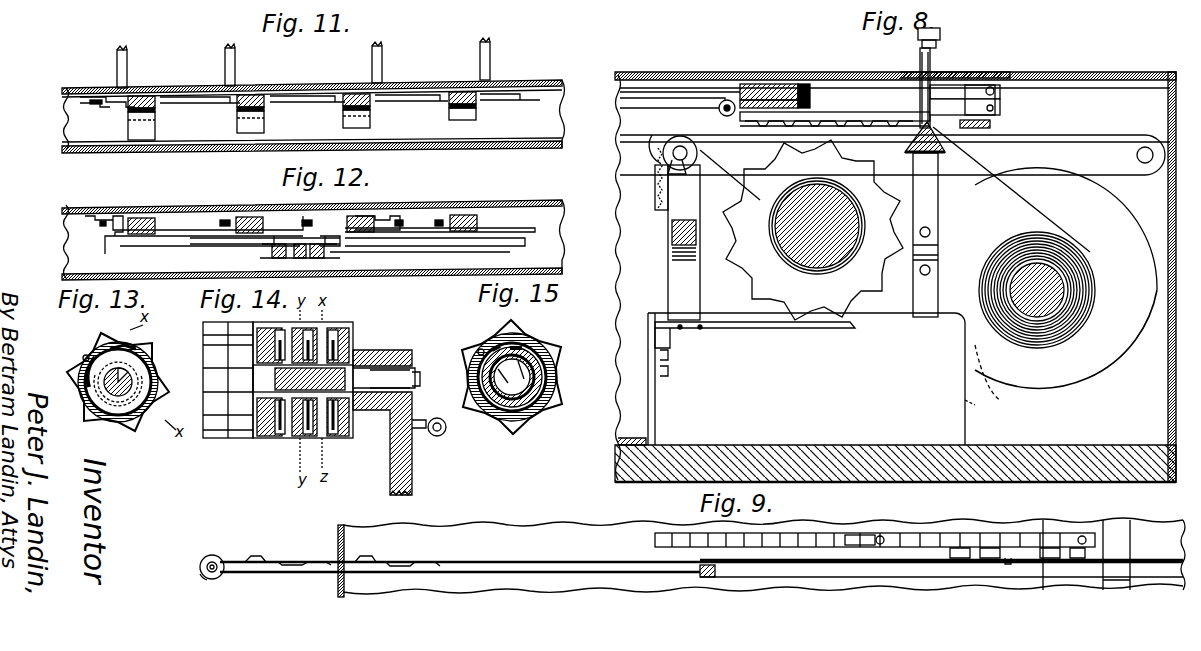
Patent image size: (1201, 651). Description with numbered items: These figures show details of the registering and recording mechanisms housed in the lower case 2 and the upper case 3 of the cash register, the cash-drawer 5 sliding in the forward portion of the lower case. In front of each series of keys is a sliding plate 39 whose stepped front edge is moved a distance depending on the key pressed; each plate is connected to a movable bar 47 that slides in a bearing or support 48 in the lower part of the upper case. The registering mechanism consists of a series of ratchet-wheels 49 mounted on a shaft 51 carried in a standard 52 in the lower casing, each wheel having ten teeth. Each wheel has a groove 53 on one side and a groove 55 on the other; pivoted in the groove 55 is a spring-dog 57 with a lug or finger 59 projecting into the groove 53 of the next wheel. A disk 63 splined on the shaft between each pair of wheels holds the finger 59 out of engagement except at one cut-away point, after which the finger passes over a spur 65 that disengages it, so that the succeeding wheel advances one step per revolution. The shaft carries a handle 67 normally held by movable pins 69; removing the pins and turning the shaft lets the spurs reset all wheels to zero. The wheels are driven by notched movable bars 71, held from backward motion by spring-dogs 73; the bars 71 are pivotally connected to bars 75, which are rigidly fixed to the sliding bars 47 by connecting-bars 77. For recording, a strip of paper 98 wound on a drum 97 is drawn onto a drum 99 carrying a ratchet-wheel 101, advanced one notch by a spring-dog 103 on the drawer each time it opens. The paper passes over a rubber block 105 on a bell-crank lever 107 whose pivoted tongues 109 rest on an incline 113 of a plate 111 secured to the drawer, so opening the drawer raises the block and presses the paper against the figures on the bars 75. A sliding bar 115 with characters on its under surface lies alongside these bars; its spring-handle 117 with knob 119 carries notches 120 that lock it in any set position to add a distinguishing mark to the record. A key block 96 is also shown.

In FIG. 8, the lower case 2 is at (1165, 200).
In FIG. 11, the upper case 3 is at (552, 112).
In FIG. 12, the upper case 3 is at (538, 212).
In FIG. 8, the upper case 3 is at (1045, 80).
In FIG. 9, the upper case 3 is at (550, 540).
In FIG. 8, the cash-drawer 5 is at (632, 422).
In FIG. 11, the sliding plate 39 is at (497, 49).
In FIG. 11, the movable bar 47 is at (462, 104).
In FIG. 12, the movable bar 47 is at (485, 186).
In FIG. 8, the movable bar 47 is at (685, 100).
In FIG. 8, the bearing or support 48 is at (1000, 126).
In FIG. 13, the ratchet-wheel 49 is at (160, 380).
In FIG. 14, the ratchet-wheel 49 is at (203, 330).
In FIG. 15, the ratchet-wheel 49 is at (530, 425).
In FIG. 8, the ratchet-wheel 49 is at (658, 176).
In FIG. 13, the shaft 51 is at (100, 375).
In FIG. 14, the shaft 51 is at (410, 366).
In FIG. 14, the bearing or standard 52 is at (412, 470).
In FIG. 8, the bearing or standard 52 is at (660, 240).
In FIG. 14, the groove 53 is at (320, 452).
In FIG. 13, the groove 55 is at (125, 408).
In FIG. 14, the groove 55 is at (340, 420).
In FIG. 15, the groove 55 is at (540, 358).
In FIG. 15, the spring-dog 57 is at (478, 350).
In FIG. 13, the lug or finger 59 is at (115, 350).
In FIG. 15, the lug or finger 59 is at (518, 346).
In FIG. 13, the disk 63 is at (150, 355).
In FIG. 14, the disk 63 is at (245, 462).
In FIG. 15, the disk 63 is at (545, 400).
In FIG. 13, the spur 65 is at (92, 356).
In FIG. 15, the spur 65 is at (494, 348).
In FIG. 14, the handle 67 is at (440, 434).
In FIG. 15, the handle 67 is at (543, 378).
In FIG. 14, the movable pin 69 is at (426, 418).
In FIG. 8, the movable bar 71 is at (668, 140).
In FIG. 9, the movable bar 71 is at (790, 533).
In FIG. 8, the spring-dog 73 is at (684, 242).
In FIG. 12, the bar 75 is at (350, 280).
In FIG. 8, the bar 75 is at (843, 112).
In FIG. 9, the bar 75 is at (898, 533).
In FIG. 12, the connecting-bar 77 is at (425, 248).
In FIG. 11, the key blocks 96 is at (488, 120).
In FIG. 8, the drum or wheel 97 is at (1120, 226).
In FIG. 8, the strip of paper 98 is at (1070, 255).
In FIG. 8, the drum 99 is at (780, 255).
In FIG. 8, the ratchet-wheel 101 is at (818, 239).
In FIG. 8, the spring-dog 103 is at (775, 330).
In FIG. 8, the block 105 is at (925, 160).
In FIG. 8, the bell-crank lever 107 is at (1040, 140).
In FIG. 8, the pivoted tongue 109 is at (925, 318).
In FIG. 8, the plate 111 is at (868, 388).
In FIG. 8, the incline 113 is at (980, 350).
In FIG. 9, the sliding bar 115 is at (760, 562).
In FIG. 9, the spring-handle 117 is at (420, 560).
In FIG. 9, the knob 119 is at (205, 578).
In FIG. 9, the notch 120 is at (378, 552).